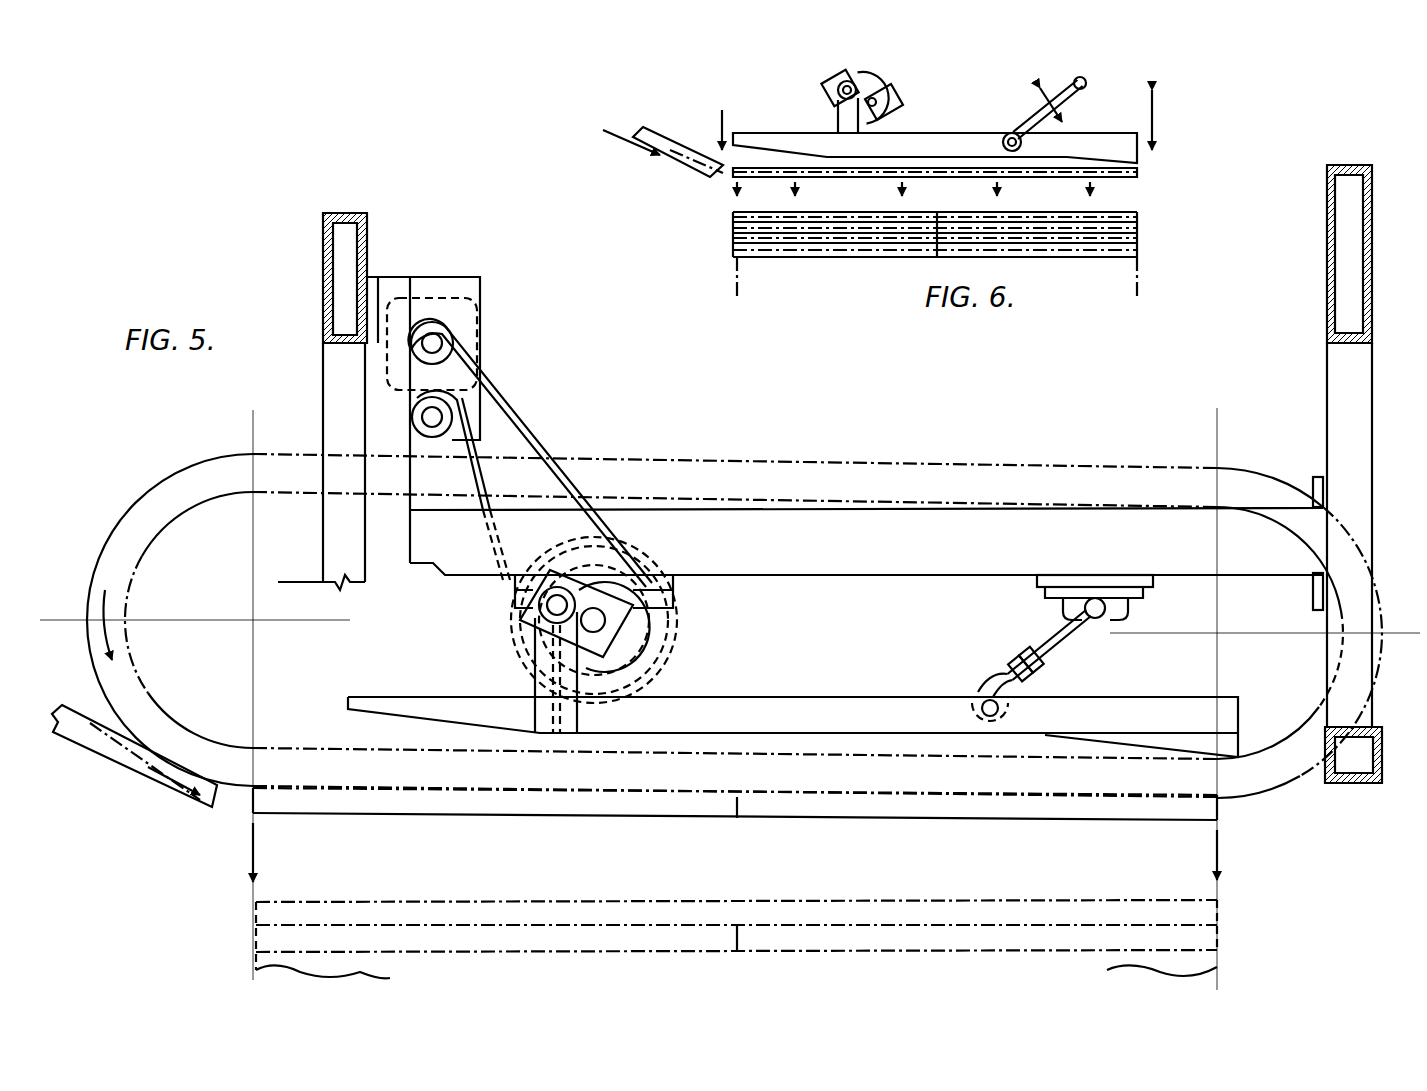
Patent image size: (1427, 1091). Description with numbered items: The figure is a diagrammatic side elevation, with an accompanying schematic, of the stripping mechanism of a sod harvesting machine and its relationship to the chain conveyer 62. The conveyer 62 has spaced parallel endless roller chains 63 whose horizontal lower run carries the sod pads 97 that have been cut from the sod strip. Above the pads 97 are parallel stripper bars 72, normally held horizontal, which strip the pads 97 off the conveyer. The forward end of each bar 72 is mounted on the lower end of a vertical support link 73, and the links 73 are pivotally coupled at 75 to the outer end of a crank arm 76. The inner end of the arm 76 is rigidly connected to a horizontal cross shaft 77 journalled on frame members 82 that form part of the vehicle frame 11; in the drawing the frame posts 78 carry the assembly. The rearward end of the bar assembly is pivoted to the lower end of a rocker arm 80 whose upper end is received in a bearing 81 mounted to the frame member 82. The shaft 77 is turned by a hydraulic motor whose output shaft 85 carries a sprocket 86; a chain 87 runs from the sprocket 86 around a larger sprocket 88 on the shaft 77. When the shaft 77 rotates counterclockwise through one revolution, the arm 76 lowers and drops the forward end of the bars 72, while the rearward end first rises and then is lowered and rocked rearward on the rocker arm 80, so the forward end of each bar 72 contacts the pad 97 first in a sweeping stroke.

In FIG. 5, the frame 11 is at (1325, 320).
In FIG. 5, the chain conveyer 62 is at (893, 472).
In FIG. 5, the endless flexible roller chains 63 is at (180, 493).
In FIG. 5, the stripper bars 72 is at (868, 697).
In FIG. 6, the stripper bars 72 is at (965, 110).
In FIG. 5, the vertical support link 73 is at (533, 687).
In FIG. 6, the vertical support link 73 is at (838, 120).
In FIG. 5, the pivotal coupling 75 is at (540, 606).
In FIG. 5, the crank arm 76 is at (620, 647).
In FIG. 6, the crank arm 76 is at (830, 75).
In FIG. 5, the horizontal cross shaft 77 is at (640, 620).
In FIG. 6, the horizontal cross shaft 77 is at (885, 88).
In FIG. 5, the post 78 is at (332, 398).
In FIG. 5, the rocker arm 80 is at (1057, 643).
In FIG. 6, the rocker arm 80 is at (1060, 103).
In FIG. 5, the bearing 81 is at (1130, 598).
In FIG. 5, the frame members 82 is at (913, 560).
In FIG. 5, the output shaft 85 is at (432, 343).
In FIG. 5, the sprocket 86 is at (545, 322).
In FIG. 5, the chain 87 is at (553, 443).
In FIG. 5, the larger sprocket 88 is at (677, 625).
In FIG. 5, the sod pads 97 is at (122, 762).
In FIG. 6, the sod pads 97 is at (1100, 173).